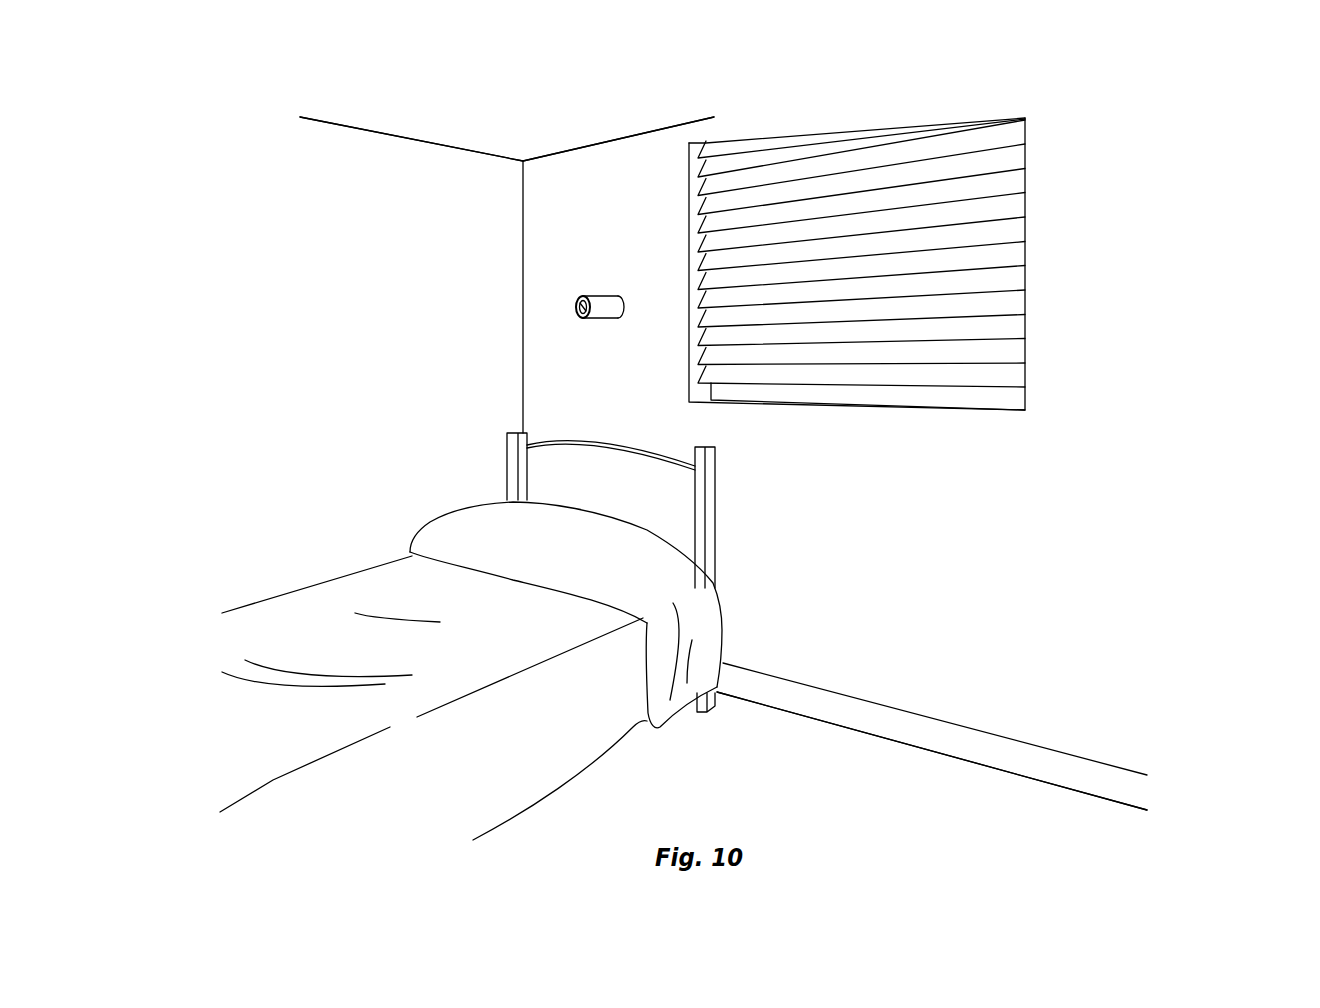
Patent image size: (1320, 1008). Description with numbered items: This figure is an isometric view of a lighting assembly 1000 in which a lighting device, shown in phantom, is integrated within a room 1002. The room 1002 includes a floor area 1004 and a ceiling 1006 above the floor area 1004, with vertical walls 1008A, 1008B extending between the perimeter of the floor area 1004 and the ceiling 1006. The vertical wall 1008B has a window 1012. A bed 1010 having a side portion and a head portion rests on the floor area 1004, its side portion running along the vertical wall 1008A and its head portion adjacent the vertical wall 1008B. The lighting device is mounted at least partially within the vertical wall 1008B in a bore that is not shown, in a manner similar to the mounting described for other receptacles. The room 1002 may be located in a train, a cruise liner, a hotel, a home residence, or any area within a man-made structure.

The lighting assembly 1000 is at (1222, 96).
The room 1002 is at (1121, 455).
The floor area 1004 is at (948, 810).
The ceiling 1006 is at (524, 135).
The vertical wall 1008A is at (243, 168).
The vertical wall 1008B is at (1088, 193).
The bed 1010 is at (300, 620).
The window 1012 is at (902, 178).